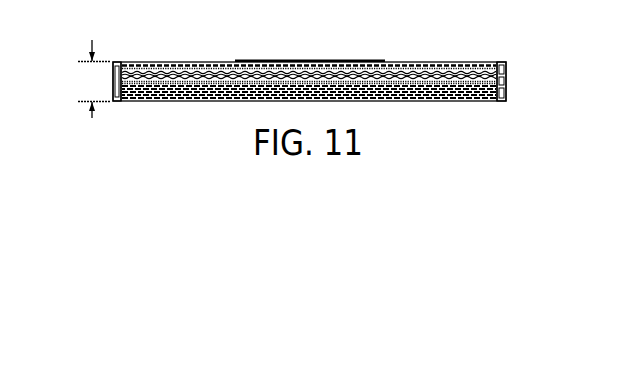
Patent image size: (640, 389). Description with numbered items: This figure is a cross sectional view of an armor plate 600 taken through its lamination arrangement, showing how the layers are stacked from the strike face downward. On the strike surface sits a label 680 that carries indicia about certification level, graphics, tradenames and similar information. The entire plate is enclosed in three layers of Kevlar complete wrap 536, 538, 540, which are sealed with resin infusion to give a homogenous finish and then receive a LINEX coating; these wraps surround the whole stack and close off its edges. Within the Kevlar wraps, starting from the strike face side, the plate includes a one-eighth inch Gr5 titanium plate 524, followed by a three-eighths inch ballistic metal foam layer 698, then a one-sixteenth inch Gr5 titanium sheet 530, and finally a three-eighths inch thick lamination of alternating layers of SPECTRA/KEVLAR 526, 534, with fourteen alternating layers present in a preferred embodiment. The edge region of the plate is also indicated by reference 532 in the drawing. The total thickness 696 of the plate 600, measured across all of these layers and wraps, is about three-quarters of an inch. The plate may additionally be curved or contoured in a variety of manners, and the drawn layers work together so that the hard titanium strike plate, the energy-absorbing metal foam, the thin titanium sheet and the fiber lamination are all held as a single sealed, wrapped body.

The plate 600 is at (404, 63).
The label 680 is at (283, 61).
The titanium plate 524 is at (508, 65).
The ballistic metal foam layer 698 is at (508, 78).
The titanium sheet 530 is at (508, 87).
The lamination of alternating layers of SPECTRA/KEVLAR 526 is at (546, 110).
The lamination of alternating layers of SPECTRA/KEVLAR 534 is at (508, 96).
The edge member 532 is at (376, 115).
The Kevlar complete wrap 536 is at (282, 129).
The Kevlar complete wrap 538 is at (282, 129).
The Kevlar complete wrap 540 is at (222, 102).
The total thickness 696 is at (88, 79).